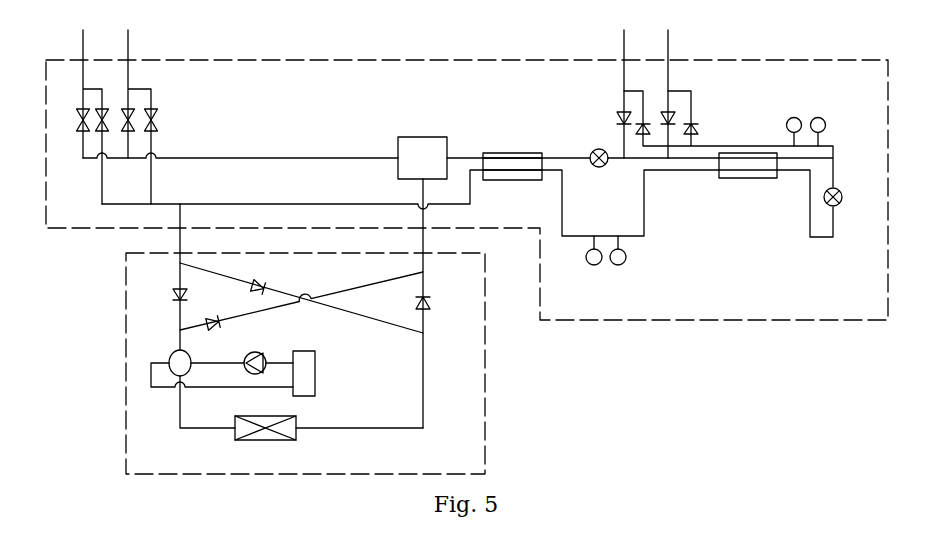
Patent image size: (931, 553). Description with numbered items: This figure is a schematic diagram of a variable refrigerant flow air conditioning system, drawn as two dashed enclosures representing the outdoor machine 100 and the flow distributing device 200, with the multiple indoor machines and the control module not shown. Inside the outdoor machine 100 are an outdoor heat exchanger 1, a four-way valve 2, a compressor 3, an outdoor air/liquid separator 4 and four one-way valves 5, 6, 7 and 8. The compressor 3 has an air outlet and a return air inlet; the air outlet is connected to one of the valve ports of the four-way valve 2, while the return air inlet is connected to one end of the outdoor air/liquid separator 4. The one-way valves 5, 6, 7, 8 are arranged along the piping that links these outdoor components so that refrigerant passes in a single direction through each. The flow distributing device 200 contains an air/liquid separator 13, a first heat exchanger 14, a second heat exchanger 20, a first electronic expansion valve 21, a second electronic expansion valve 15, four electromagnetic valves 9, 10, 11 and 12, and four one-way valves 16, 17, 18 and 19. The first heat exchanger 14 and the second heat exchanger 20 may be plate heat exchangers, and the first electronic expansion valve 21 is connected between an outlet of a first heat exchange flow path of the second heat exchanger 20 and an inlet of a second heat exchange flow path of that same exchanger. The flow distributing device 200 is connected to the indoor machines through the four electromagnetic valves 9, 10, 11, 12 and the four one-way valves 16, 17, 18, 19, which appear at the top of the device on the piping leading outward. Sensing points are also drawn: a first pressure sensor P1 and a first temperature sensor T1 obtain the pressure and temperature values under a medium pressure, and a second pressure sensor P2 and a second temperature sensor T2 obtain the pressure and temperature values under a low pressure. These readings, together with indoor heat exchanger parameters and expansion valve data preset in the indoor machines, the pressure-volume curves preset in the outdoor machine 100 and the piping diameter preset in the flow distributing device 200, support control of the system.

The outdoor heat exchanger 1 is at (268, 440).
The four-way valve 2 is at (173, 352).
The compressor 3 is at (258, 352).
The outdoor air/liquid separator 4 is at (315, 375).
The one-way valve 5 is at (176, 289).
The one-way valve 6 is at (212, 320).
The one-way valve 7 is at (258, 284).
The one-way valve 8 is at (430, 300).
The electromagnetic valve 9 is at (78, 120).
The electromagnetic valve 10 is at (103, 110).
The electromagnetic valve 11 is at (129, 110).
The electromagnetic valve 12 is at (152, 110).
The air/liquid separator 13 is at (426, 137).
The first heat exchanger 14 is at (508, 153).
The second electronic expansion valve 15 is at (598, 149).
The one-way valve 16 is at (618, 112).
The one-way valve 17 is at (645, 124).
The one-way valve 18 is at (670, 112).
The one-way valve 19 is at (694, 124).
The second heat exchanger 20 is at (748, 178).
The first electronic expansion valve 21 is at (842, 197).
The outdoor machine 100 is at (486, 405).
The flow distributing device 200 is at (713, 320).
The first pressure sensor P1 is at (796, 118).
The first temperature sensor T1 is at (820, 118).
The second pressure sensor P2 is at (595, 265).
The second temperature sensor T2 is at (619, 265).